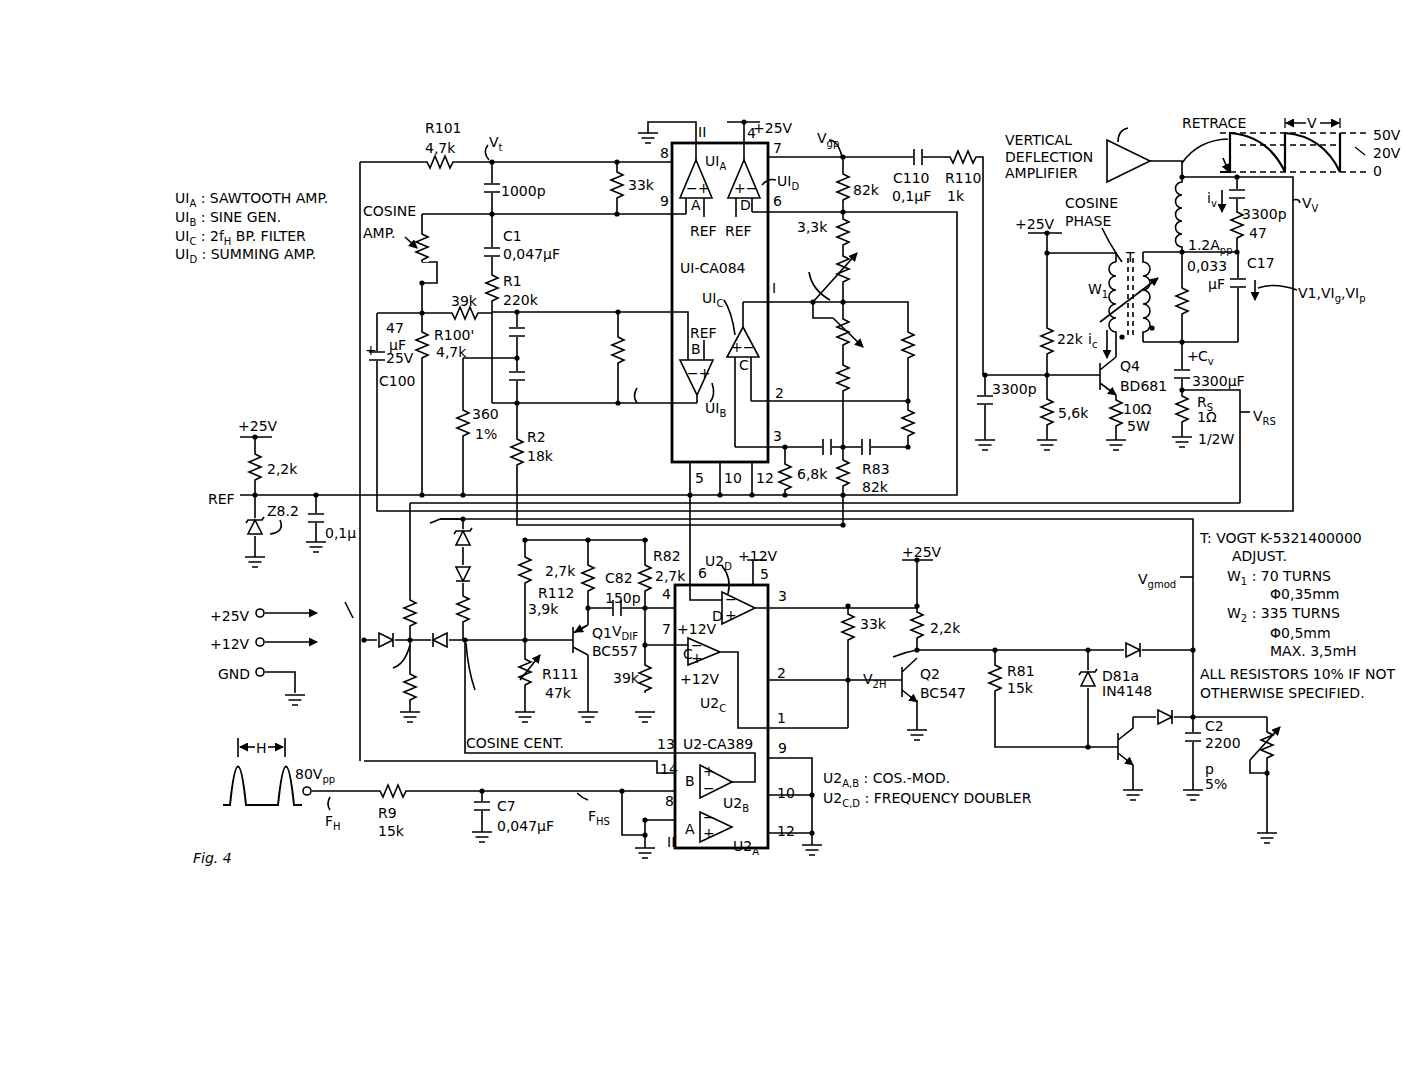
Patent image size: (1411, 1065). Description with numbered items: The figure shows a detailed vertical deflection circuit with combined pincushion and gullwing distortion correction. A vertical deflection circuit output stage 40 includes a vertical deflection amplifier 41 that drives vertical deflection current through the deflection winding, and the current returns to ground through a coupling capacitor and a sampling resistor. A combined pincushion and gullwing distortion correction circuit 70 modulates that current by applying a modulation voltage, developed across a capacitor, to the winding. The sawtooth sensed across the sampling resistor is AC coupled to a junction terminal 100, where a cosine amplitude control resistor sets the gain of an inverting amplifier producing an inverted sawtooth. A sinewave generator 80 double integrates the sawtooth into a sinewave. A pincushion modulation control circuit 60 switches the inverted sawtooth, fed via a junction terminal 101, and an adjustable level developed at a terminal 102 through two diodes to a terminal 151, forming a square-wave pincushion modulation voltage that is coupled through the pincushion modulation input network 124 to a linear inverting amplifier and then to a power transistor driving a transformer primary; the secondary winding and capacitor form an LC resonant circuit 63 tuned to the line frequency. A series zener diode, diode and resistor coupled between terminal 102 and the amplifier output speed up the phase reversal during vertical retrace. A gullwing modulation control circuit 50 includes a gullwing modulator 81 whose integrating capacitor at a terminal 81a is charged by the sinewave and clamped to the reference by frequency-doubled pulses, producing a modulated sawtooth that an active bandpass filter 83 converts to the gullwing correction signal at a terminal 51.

The junction terminal 100 is at (422, 313).
The vertical sawtooth clamp network 124 is at (444, 571).
The terminal 151 is at (408, 617).
The junction terminal 101 is at (363, 642).
The terminal 102 is at (466, 642).
The pincushion modulation control circuit 60 is at (540, 684).
The sinewave generator 80 is at (617, 392).
The active bandpass filter 83 is at (810, 380).
The gullwing modulation control circuit 50 is at (945, 486).
The terminal 51 is at (846, 302).
The vertical deflection circuit output stage 40 is at (1169, 189).
The vertical deflection amplifier 41 is at (1120, 143).
The LC resonant circuit 63 is at (1179, 276).
The gullwing modulator 81 is at (1187, 642).
The terminal 81a is at (1193, 712).
The combined pincushion and gullwing distortion correction circuit 70 is at (1320, 844).